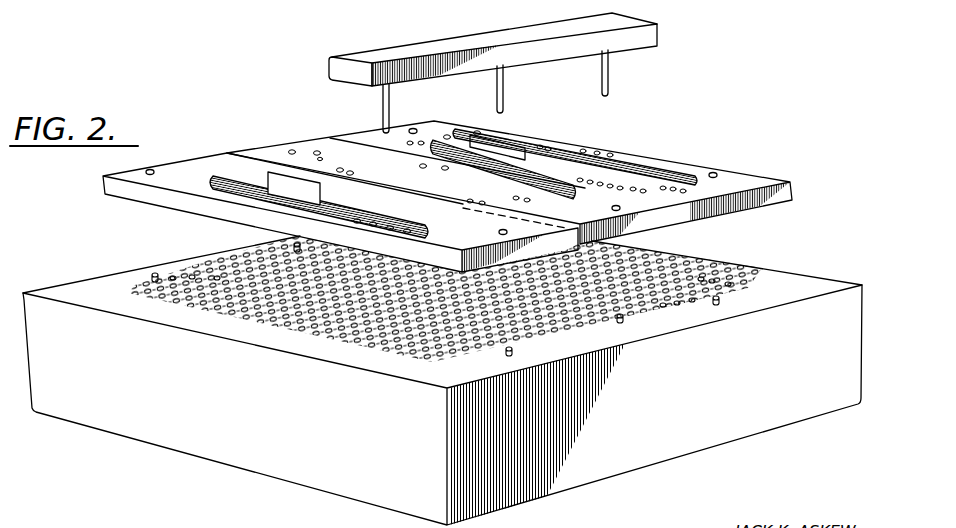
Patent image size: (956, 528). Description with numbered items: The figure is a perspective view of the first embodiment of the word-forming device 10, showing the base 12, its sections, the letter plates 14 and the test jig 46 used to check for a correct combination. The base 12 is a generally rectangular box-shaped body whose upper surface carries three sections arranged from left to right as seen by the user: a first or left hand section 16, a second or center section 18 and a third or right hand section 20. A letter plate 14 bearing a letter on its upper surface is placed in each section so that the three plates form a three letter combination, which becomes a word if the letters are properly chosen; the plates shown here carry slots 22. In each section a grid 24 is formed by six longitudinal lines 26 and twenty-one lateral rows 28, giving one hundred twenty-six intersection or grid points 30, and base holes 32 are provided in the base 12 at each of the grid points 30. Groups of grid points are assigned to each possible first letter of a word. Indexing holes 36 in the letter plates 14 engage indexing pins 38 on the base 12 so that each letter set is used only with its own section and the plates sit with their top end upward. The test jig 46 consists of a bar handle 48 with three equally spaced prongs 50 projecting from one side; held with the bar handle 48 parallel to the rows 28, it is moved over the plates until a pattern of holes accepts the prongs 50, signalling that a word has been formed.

The first preferred embodiment 10 is at (708, 146).
The base 12 is at (773, 275).
The letter plates 14 is at (282, 147).
The first section 16 is at (232, 7).
The second section 18 is at (414, 7).
The third section 20 is at (669, 7).
The slot 22 is at (241, 188).
The grid 24 is at (672, 258).
The longitudinal lines 26 is at (217, 276).
The lateral rows 28 is at (729, 282).
The grid points 30 is at (692, 302).
The base holes 32 is at (325, 338).
The indexing holes 36 is at (150, 169).
The indexing pins 38 is at (153, 274).
The test jig 46 is at (523, 43).
The bar handle 48 is at (512, 35).
The prongs 50 is at (382, 105).